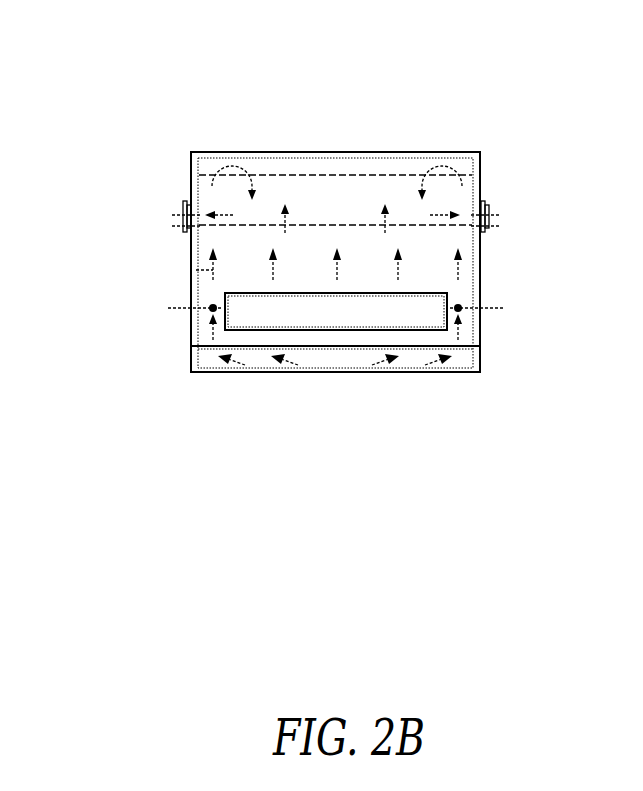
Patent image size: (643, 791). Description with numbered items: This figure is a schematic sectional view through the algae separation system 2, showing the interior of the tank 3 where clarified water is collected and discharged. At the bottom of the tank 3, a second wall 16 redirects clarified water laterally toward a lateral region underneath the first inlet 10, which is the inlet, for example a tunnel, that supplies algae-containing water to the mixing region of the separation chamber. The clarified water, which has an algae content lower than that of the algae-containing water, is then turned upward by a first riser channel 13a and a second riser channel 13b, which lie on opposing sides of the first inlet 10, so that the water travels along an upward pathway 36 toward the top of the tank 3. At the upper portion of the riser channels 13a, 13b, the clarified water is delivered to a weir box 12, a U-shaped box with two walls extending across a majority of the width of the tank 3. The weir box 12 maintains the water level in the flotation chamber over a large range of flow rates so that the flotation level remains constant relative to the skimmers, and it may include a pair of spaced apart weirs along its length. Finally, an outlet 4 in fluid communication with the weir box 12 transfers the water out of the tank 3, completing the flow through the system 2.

The algae separation system 2 is at (168, 80).
The tank 3 is at (475, 257).
The outlet 4 is at (160, 224).
The first inlet 10 is at (377, 322).
The weir box 12 is at (263, 212).
The first riser channel 13a is at (200, 330).
The second riser channel 13b is at (472, 332).
The second wall 16 is at (325, 362).
The upward pathway 36 is at (196, 270).